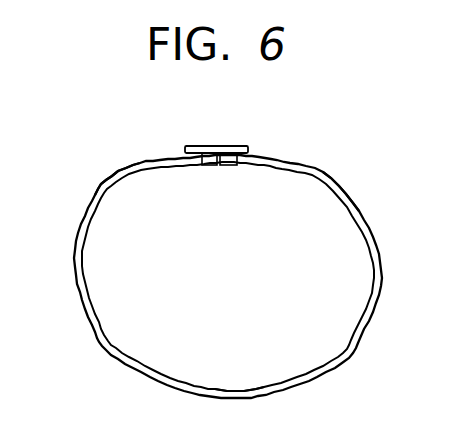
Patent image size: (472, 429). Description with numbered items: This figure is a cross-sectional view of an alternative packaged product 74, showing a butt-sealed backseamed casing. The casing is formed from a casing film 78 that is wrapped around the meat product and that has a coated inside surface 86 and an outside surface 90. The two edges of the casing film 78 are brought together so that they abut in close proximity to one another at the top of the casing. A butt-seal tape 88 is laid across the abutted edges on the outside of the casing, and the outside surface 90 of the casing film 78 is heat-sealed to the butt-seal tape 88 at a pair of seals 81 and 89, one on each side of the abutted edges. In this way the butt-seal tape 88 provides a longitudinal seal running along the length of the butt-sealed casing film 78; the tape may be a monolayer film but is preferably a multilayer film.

The packaged product 74 is at (328, 148).
The casing film 78 is at (73, 275).
The seal 81 is at (205, 166).
The inside surface 86 is at (217, 389).
The butt-seal tape 88 is at (207, 146).
The seal 89 is at (232, 166).
The outside surface 90 is at (383, 263).